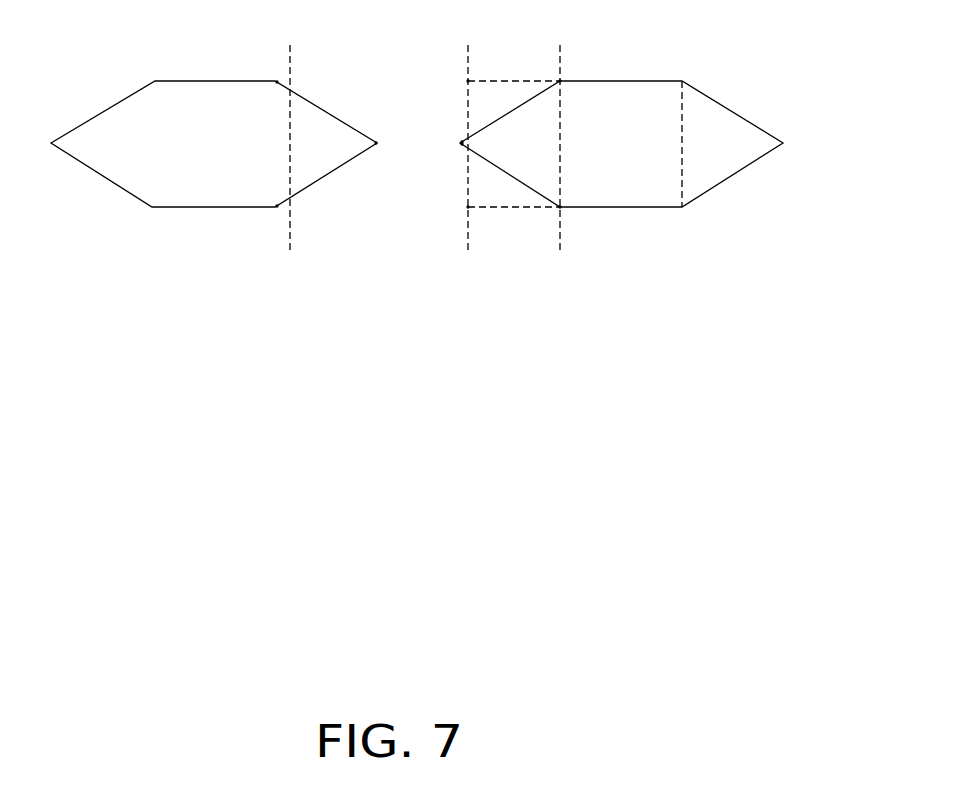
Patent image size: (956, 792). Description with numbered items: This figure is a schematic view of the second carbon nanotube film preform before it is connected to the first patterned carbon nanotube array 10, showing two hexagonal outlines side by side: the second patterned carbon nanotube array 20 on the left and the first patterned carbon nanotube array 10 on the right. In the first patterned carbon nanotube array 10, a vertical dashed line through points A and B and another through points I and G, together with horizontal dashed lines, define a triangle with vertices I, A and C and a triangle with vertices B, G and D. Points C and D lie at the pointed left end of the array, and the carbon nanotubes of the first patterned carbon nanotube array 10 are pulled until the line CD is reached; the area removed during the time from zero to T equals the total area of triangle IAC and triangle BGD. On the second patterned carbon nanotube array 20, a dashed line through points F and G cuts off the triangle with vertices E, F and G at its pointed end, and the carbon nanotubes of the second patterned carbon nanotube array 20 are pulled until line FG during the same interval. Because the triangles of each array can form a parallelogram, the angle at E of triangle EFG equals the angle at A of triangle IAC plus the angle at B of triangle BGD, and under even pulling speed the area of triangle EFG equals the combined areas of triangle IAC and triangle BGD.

The first patterned carbon nanotube array 10 is at (722, 138).
The second patterned carbon nanotube array 20 is at (224, 165).
The point A is at (570, 69).
The point B is at (570, 219).
The point C is at (455, 125).
The point D is at (459, 158).
The point E is at (385, 144).
The point F is at (293, 81).
The point G is at (372, 207).
The point I is at (458, 80).